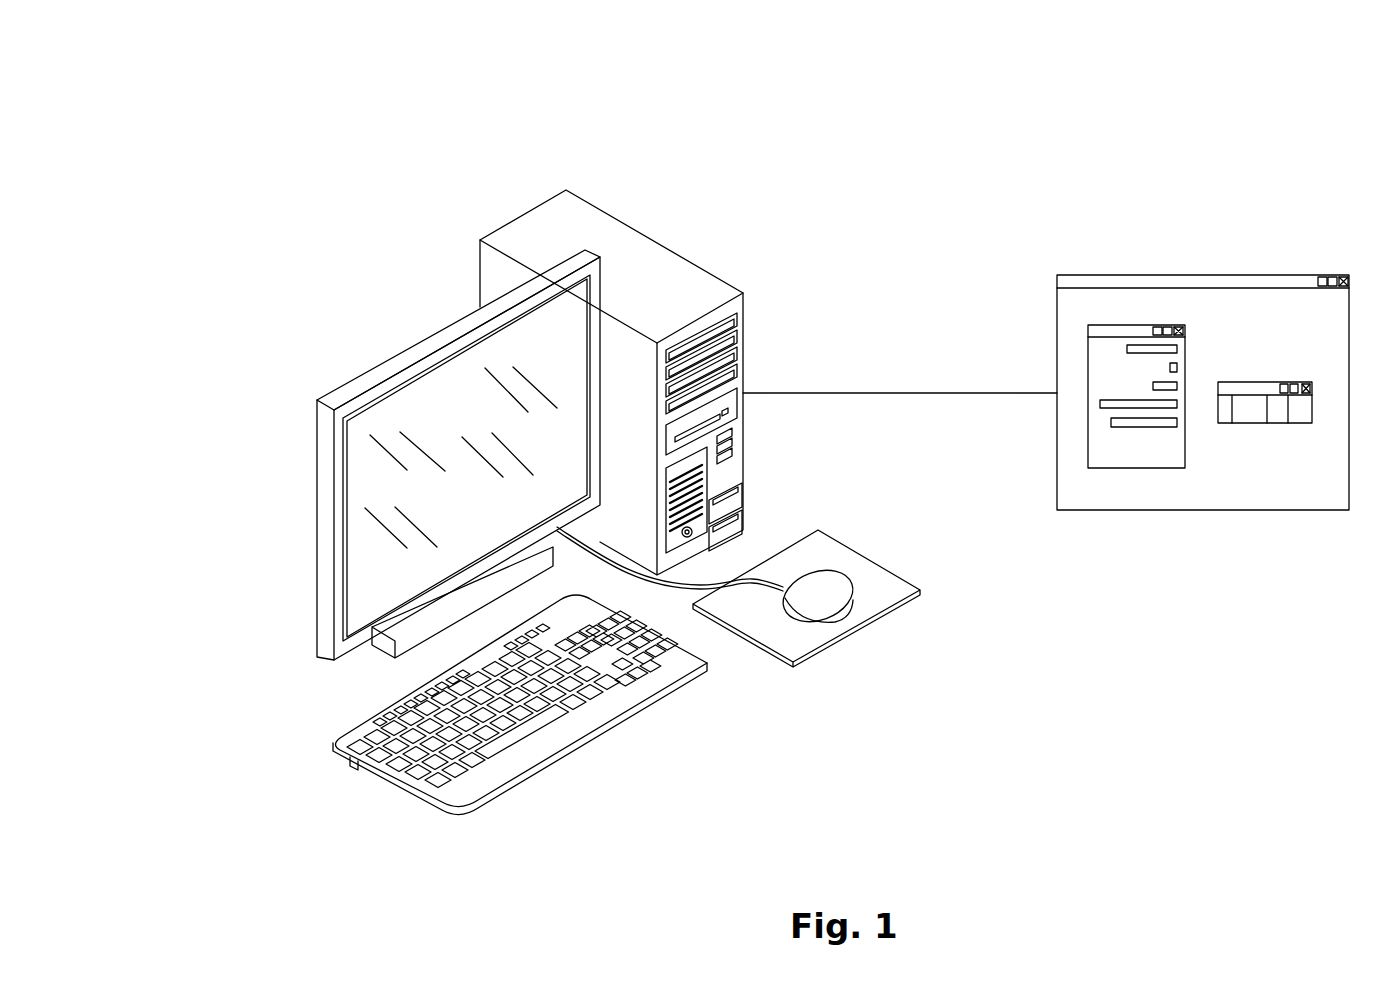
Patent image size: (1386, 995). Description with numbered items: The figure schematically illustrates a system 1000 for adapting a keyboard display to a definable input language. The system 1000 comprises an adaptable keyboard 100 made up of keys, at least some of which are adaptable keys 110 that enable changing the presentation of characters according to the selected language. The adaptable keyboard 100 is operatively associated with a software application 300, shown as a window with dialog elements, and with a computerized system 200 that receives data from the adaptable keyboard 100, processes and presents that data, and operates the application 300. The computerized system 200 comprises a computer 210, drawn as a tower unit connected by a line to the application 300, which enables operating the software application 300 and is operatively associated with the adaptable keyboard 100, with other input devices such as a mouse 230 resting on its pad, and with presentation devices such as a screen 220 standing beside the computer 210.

The system 1000 is at (993, 153).
The computerized system 200 is at (620, 175).
The screen 220 is at (402, 368).
The computer 210 is at (704, 298).
The mouse 230 is at (845, 598).
The adaptable keyboard 100 is at (567, 757).
The adaptable keys 110 is at (423, 787).
The software application 300 is at (1073, 362).